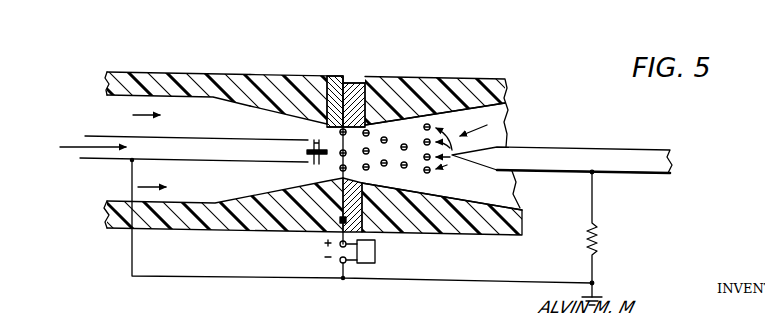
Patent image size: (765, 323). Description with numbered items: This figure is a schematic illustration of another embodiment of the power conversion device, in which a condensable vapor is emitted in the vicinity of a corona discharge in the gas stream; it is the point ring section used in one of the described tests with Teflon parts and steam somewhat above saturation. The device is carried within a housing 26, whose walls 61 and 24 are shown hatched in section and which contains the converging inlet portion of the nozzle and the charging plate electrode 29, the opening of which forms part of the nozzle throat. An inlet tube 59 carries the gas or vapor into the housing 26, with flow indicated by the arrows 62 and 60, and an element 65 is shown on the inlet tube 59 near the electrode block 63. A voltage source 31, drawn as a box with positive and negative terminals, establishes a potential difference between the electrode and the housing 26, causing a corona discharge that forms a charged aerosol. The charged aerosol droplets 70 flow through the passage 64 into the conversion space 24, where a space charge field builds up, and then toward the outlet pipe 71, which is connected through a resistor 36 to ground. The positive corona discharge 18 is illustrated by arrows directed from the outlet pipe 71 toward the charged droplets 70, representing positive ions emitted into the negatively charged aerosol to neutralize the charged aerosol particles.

The positive corona discharge 18 is at (469, 139).
The conversion space 24 is at (446, 118).
The housing 26 is at (293, 74).
The charging electrode 29 is at (351, 83).
The voltage source 31 is at (377, 254).
The resistor 36 is at (600, 242).
The inlet tube 59 is at (72, 146).
The annular flow of gas 60 is at (188, 163).
The housing wall (left portion) 61 is at (203, 73).
The gas flow in housing 62 is at (148, 114).
The electrode block 63 is at (318, 145).
The converging-diverging passage surface 64 is at (376, 118).
The inlet tube electrode clamp 65 is at (332, 162).
The charged droplets 70 is at (388, 139).
The outlet pipe 71 is at (530, 173).